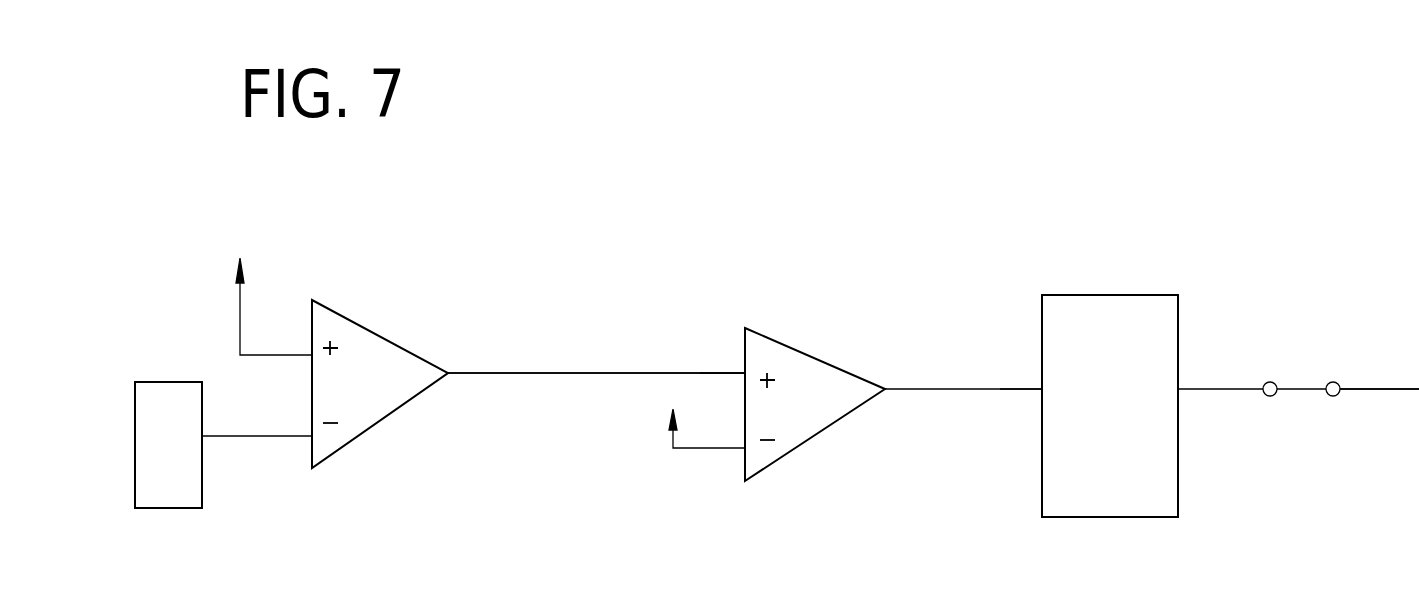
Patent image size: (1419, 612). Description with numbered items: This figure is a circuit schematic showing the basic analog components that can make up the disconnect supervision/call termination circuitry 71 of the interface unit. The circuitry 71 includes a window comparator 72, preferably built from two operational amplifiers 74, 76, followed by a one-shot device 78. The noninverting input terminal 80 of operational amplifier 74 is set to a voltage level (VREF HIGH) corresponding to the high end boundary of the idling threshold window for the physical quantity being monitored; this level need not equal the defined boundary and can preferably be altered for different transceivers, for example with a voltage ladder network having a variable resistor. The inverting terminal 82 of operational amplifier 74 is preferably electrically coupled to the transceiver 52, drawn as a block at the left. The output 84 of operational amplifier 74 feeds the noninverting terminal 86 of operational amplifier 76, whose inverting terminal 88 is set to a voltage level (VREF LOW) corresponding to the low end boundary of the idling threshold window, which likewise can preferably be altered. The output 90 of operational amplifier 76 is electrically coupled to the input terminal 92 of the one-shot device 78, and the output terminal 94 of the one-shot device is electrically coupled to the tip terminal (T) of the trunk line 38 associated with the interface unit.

The trunk line 38 is at (1395, 389).
The transceiver 52 is at (135, 425).
The disconnect supervision/call termination circuitry 71 is at (892, 24).
The window comparator 72 is at (708, 219).
The operational amplifier 74 is at (358, 320).
The operational amplifier 76 is at (823, 362).
The one-shot device 78 is at (1122, 295).
The noninverting input terminal 80 is at (312, 353).
The inverting terminal 82 is at (297, 437).
The output 84 is at (479, 373).
The noninverting terminal 86 is at (745, 373).
The inverting terminal 88 is at (742, 449).
The output 90 is at (897, 388).
The input terminal 92 is at (1041, 390).
The output terminal 94 is at (1195, 389).